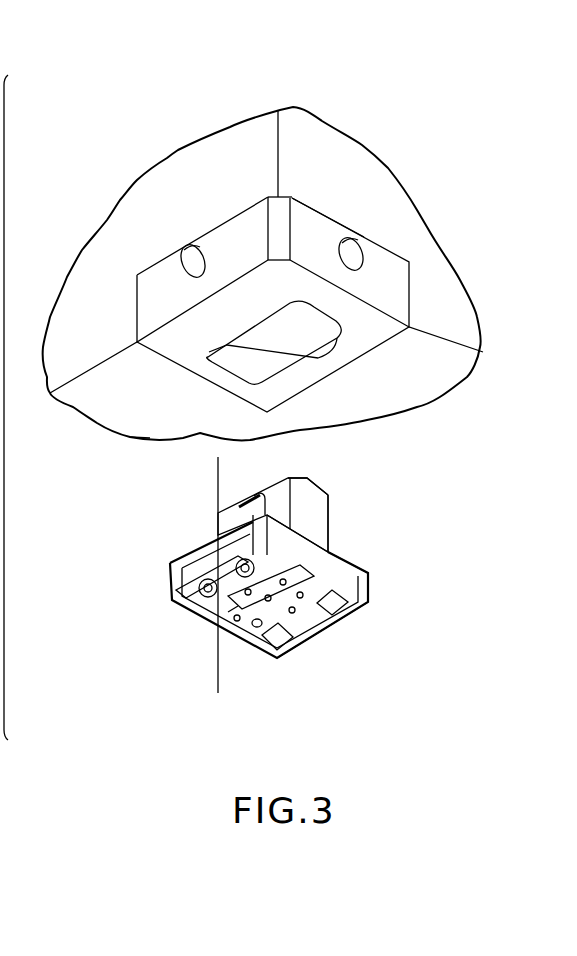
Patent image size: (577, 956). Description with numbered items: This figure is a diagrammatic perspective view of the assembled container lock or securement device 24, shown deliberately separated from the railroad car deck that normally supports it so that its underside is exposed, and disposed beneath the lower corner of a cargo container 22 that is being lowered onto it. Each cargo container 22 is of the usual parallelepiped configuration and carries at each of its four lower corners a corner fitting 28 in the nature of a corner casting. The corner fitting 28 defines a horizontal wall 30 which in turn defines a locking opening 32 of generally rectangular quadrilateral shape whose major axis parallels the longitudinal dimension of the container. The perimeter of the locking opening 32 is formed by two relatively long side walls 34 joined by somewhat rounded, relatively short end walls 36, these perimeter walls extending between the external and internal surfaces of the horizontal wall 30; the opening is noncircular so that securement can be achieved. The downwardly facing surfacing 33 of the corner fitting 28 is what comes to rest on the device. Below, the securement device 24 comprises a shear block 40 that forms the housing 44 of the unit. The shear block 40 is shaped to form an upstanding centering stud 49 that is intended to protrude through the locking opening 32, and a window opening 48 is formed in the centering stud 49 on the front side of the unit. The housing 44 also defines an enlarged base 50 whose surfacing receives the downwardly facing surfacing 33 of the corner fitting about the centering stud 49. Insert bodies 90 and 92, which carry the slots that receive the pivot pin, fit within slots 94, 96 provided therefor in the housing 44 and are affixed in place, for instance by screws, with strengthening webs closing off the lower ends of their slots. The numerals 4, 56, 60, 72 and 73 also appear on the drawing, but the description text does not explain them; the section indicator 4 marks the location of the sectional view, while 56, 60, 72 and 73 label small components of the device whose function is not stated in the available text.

The cargo container 22 is at (383, 170).
The corner fitting 28 is at (417, 283).
The downwardly facing surfacing 33 is at (173, 331).
The horizontal wall 30 is at (191, 346).
The locking opening 32 is at (260, 350).
The side walls 34 is at (258, 325).
The end walls 36 is at (282, 341).
The section line 4- 4 is at (197, 448).
The shear block 40 is at (336, 507).
The window opening 48 is at (317, 502).
The centering stud 49 is at (325, 497).
The housing 44 is at (323, 537).
The latch clip 56 is at (258, 494).
The latch rib 60 is at (239, 506).
The securement device 24 is at (393, 569).
The slot 96 is at (335, 550).
The insert body 92 is at (352, 576).
The enlarged base 50 is at (366, 582).
The fasteners 73 is at (234, 565).
The bracket bar 72 is at (228, 577).
The insert body 90 is at (241, 632).
The slot 94 is at (232, 621).